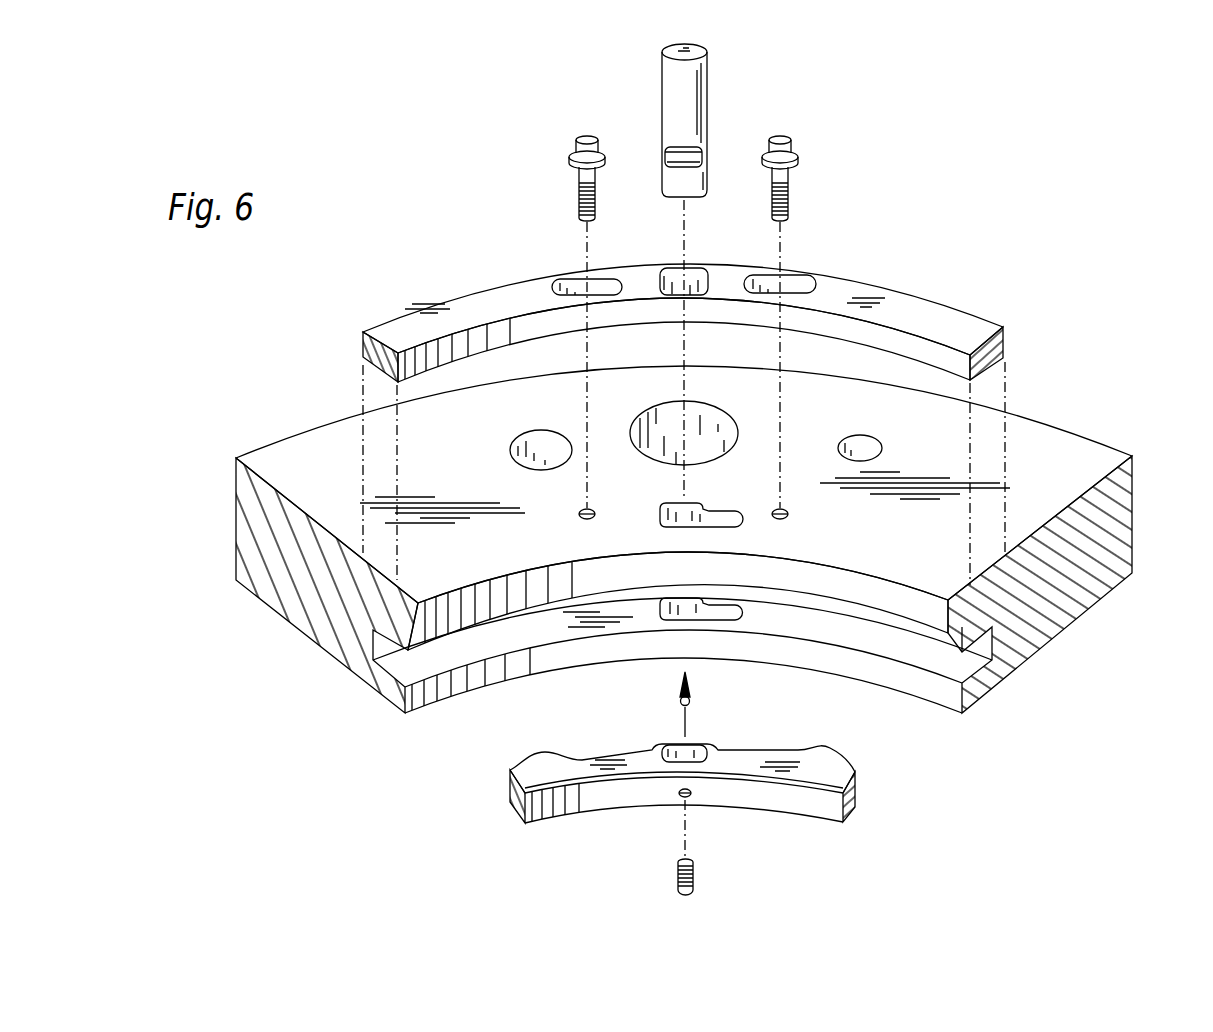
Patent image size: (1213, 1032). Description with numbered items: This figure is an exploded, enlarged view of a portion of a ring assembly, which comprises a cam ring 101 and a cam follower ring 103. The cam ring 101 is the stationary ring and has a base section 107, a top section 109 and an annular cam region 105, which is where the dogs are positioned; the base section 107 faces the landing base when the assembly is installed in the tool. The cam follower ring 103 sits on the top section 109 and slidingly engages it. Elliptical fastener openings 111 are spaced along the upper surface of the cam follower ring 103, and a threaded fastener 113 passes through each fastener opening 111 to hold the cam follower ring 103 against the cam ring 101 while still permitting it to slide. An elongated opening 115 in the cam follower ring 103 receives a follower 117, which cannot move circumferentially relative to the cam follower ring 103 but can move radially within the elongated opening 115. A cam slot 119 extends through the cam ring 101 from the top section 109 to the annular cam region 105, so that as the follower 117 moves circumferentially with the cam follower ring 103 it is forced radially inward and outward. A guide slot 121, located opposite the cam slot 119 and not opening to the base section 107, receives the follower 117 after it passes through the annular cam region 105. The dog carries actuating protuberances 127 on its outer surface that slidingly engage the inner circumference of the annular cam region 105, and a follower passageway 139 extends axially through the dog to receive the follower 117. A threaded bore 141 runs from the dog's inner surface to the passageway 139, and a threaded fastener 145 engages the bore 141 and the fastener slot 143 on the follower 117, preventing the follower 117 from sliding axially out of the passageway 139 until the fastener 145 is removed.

The cam ring 101 is at (282, 565).
The cam follower ring 103 is at (400, 325).
The annular cam region 105 is at (985, 643).
The base section 107 is at (1003, 682).
The top section 109 is at (1075, 495).
The fastener openings 111 is at (797, 290).
The threaded fastener 113 is at (783, 144).
The elongated opening 115 is at (692, 284).
The follower 117 is at (690, 52).
The cam slot 119 is at (661, 513).
The guide slot 121 is at (662, 607).
The actuating protuberances 127 is at (823, 757).
The follower passageway 139 is at (690, 752).
The bore 141 is at (682, 800).
The fastener slot 143 is at (666, 157).
The threaded fastener 145 is at (697, 880).